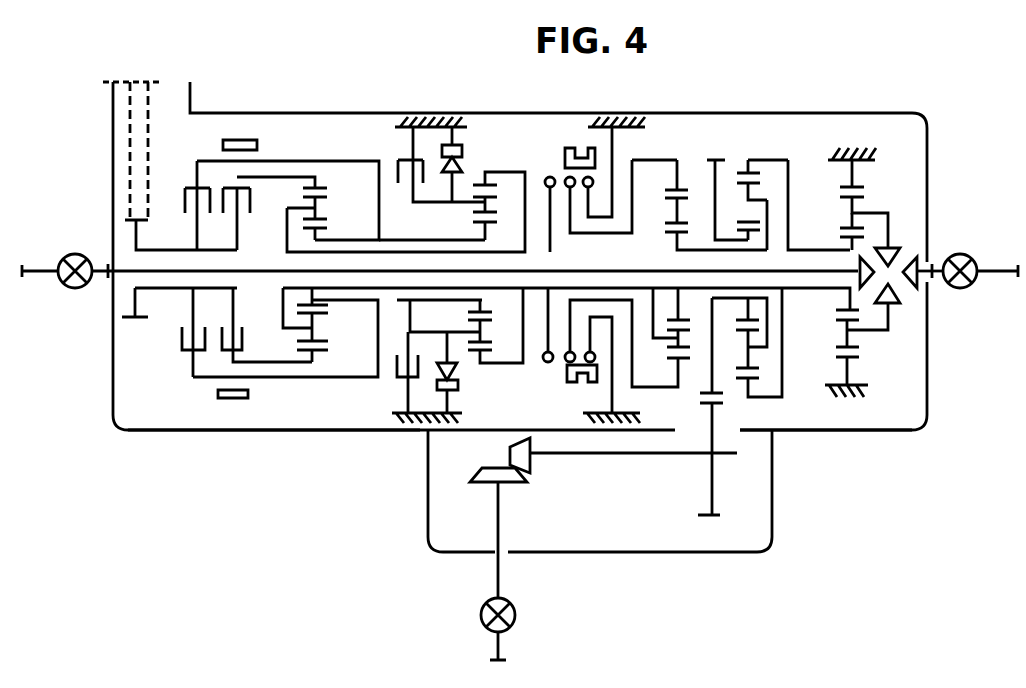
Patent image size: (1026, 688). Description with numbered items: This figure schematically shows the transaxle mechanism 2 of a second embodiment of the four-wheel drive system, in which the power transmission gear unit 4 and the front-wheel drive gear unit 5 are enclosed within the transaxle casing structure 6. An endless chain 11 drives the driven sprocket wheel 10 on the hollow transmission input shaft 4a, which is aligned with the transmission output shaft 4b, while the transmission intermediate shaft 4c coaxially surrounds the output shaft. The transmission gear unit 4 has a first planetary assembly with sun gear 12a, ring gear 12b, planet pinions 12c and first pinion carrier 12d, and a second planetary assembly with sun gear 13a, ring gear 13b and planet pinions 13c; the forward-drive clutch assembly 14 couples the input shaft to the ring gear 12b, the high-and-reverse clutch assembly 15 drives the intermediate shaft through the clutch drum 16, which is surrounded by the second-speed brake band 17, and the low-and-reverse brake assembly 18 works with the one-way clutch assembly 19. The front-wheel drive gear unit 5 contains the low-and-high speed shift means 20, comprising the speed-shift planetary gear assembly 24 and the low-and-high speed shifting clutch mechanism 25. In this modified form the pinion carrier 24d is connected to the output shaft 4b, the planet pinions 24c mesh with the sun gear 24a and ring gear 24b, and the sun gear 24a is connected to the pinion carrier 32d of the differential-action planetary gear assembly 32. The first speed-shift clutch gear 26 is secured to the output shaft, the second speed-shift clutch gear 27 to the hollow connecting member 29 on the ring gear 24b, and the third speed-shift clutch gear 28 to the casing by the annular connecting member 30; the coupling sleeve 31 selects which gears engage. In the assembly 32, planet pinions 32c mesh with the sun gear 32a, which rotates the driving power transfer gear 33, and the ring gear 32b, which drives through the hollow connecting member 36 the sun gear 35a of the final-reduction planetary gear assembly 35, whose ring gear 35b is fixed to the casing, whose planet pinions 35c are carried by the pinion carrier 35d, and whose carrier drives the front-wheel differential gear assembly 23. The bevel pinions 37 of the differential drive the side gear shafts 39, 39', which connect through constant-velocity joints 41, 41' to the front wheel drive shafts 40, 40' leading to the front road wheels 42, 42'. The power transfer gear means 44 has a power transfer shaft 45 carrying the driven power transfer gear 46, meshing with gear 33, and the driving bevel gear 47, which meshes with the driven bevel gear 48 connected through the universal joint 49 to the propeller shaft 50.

The transaxle mechanism 2 is at (363, 463).
The power transmission gear unit 4 is at (313, 148).
The transmission input shaft 4a is at (149, 292).
The transmission output shaft 4b is at (283, 290).
The transmission intermediate shaft 4c is at (397, 300).
The front-wheel drive gear unit 5 is at (806, 480).
The transaxle casing structure 6 is at (248, 113).
The driven sprocket wheel 10 is at (138, 236).
The endless chain 11 is at (128, 132).
The sun gear 12a is at (323, 229).
The ring gear 12b is at (326, 191).
The planet pinions 12c is at (328, 342).
The first pinion carrier 12d is at (287, 212).
The sun gear 13a is at (473, 221).
The ring gear 13b is at (477, 184).
The planet pinions 13c is at (492, 334).
The forward-drive clutch assembly 14 is at (218, 357).
The high-and-reverse clutch assembly 15 is at (181, 358).
The clutch drum 16 is at (290, 379).
The second-speed brake band 17 is at (235, 399).
The low-and-reverse brake assembly 18 is at (393, 150).
The one-way clutch assembly 19 is at (434, 143).
The low-and-high speed shift means 20 is at (621, 116).
The front-wheel differential gear assembly 23 is at (907, 310).
The speed-shift planetary gear assembly 24 is at (673, 144).
The sun gear 24a is at (673, 316).
The ring gear 24b is at (688, 189).
The planet pinions 24c is at (684, 236).
The pinion carrier 24d is at (668, 340).
The low-and-high speed shifting clutch mechanism 25 is at (560, 142).
The first speed-shift clutch gear 26 is at (546, 362).
The second speed-shift clutch gear 27 is at (570, 363).
The third speed-shift clutch gear 28 is at (592, 363).
The hollow connecting member 29 is at (631, 395).
The annular connecting member 30 is at (613, 150).
The coupling sleeve 31 is at (565, 160).
The differential-action planetary gear assembly 32 is at (774, 125).
The sun gear 32a is at (760, 322).
The ring gear 32b is at (741, 174).
The planet pinions 32c is at (768, 200).
The pinion carrier 32d is at (762, 185).
The driving power transfer gear 33 is at (716, 160).
The final-reduction planetary gear assembly 35 is at (852, 146).
The sun gear 35a is at (840, 236).
The ring gear 35b is at (858, 191).
The planet pinions 35c is at (836, 352).
The pinion carrier 35d is at (868, 213).
The hollow connecting member 36 is at (815, 292).
The bevel pinions 37 is at (892, 248).
The side gear shaft 39 is at (96, 287).
The side gear shaft 39' is at (946, 288).
The front wheel drive shaft 40 is at (57, 261).
The front wheel drive shaft 40' is at (998, 288).
The constant-velocity joint 41 is at (445, 292).
The constant-velocity joint 41' is at (964, 254).
The front road wheel 42 is at (839, 270).
The front road wheel 42' is at (934, 250).
The power transfer gear means 44 is at (607, 520).
The power transfer shaft 45 is at (600, 455).
The driven power transfer gear 46 is at (712, 483).
The driving bevel gear 47 is at (530, 470).
The driven bevel gear 48 is at (485, 485).
The universal joint 49 is at (516, 612).
The propeller shaft 50 is at (492, 646).